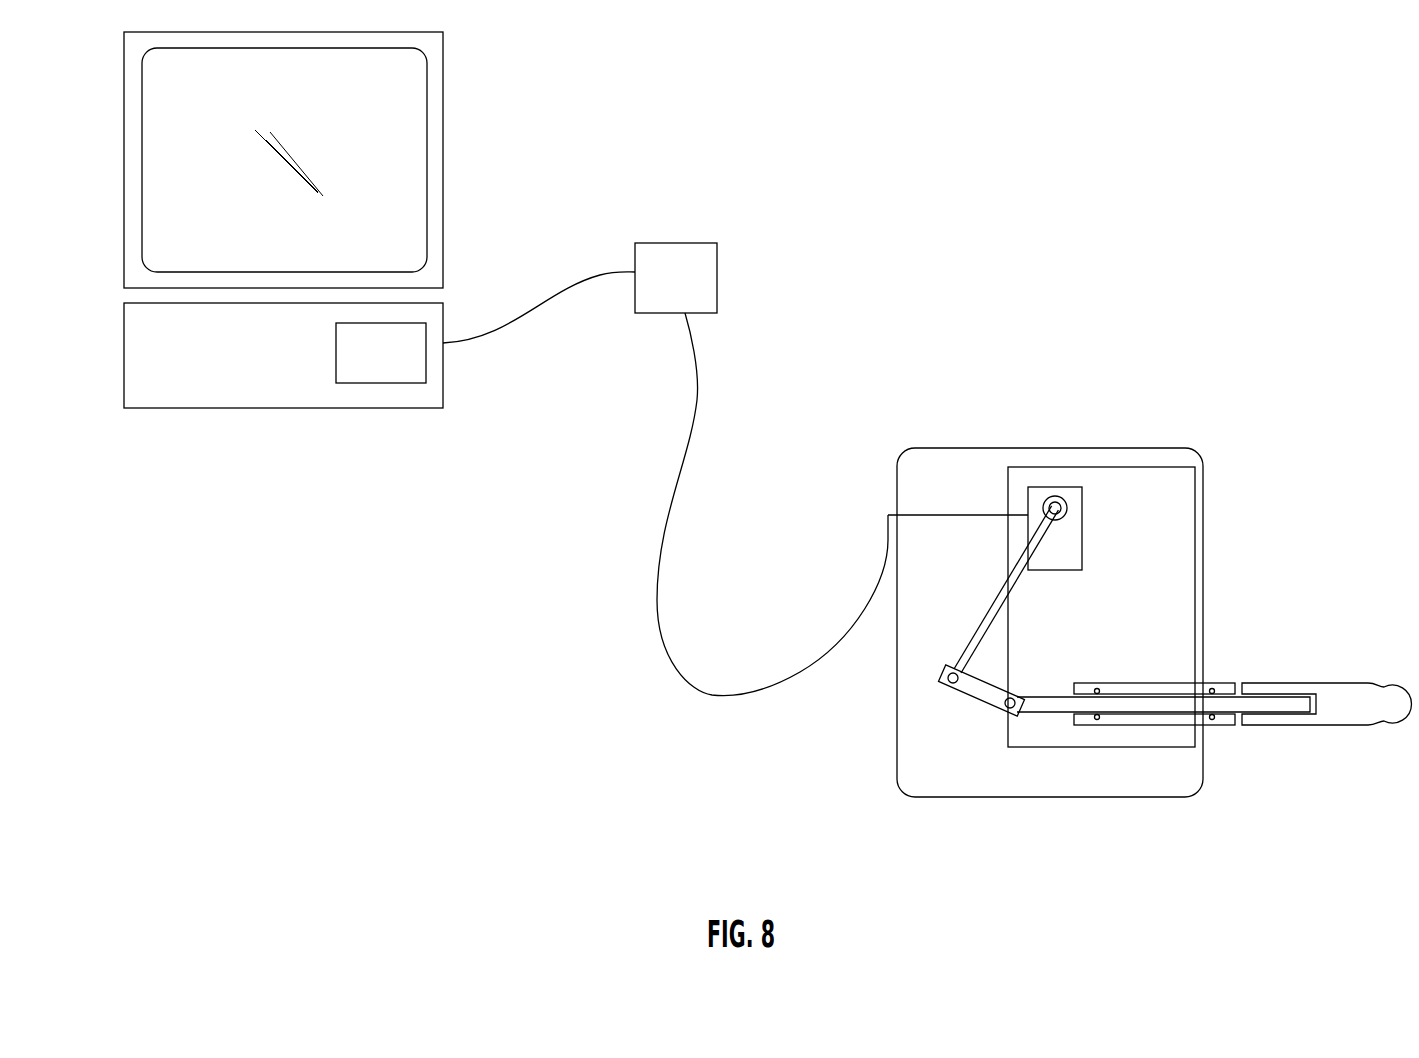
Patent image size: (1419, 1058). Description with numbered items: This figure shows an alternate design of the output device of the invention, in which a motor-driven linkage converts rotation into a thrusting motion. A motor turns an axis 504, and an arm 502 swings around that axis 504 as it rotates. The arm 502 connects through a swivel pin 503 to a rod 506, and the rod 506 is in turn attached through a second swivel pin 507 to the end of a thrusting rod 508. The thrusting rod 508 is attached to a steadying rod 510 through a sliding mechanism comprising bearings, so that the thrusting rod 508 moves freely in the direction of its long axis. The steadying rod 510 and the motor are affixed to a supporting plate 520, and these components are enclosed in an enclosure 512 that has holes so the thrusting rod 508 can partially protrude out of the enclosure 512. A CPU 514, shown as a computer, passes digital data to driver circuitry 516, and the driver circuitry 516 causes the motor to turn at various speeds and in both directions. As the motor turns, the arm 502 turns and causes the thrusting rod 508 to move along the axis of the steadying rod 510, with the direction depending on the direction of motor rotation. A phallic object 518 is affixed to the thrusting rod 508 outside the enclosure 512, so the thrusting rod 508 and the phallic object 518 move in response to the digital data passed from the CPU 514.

The arm 502 is at (1070, 487).
The swivel pin 503 is at (948, 680).
The axis 504 is at (1000, 600).
The rod 506 is at (972, 688).
The swivel pin 507 is at (1003, 712).
The thrusting rod 508 is at (1050, 705).
The steadying rod 510 is at (1210, 727).
The enclosure 512 is at (895, 775).
The CPU 514 is at (293, 398).
The driver circuitry 516 is at (700, 284).
The phallic object 518 is at (1338, 695).
The supporting plate 520 is at (1168, 483).